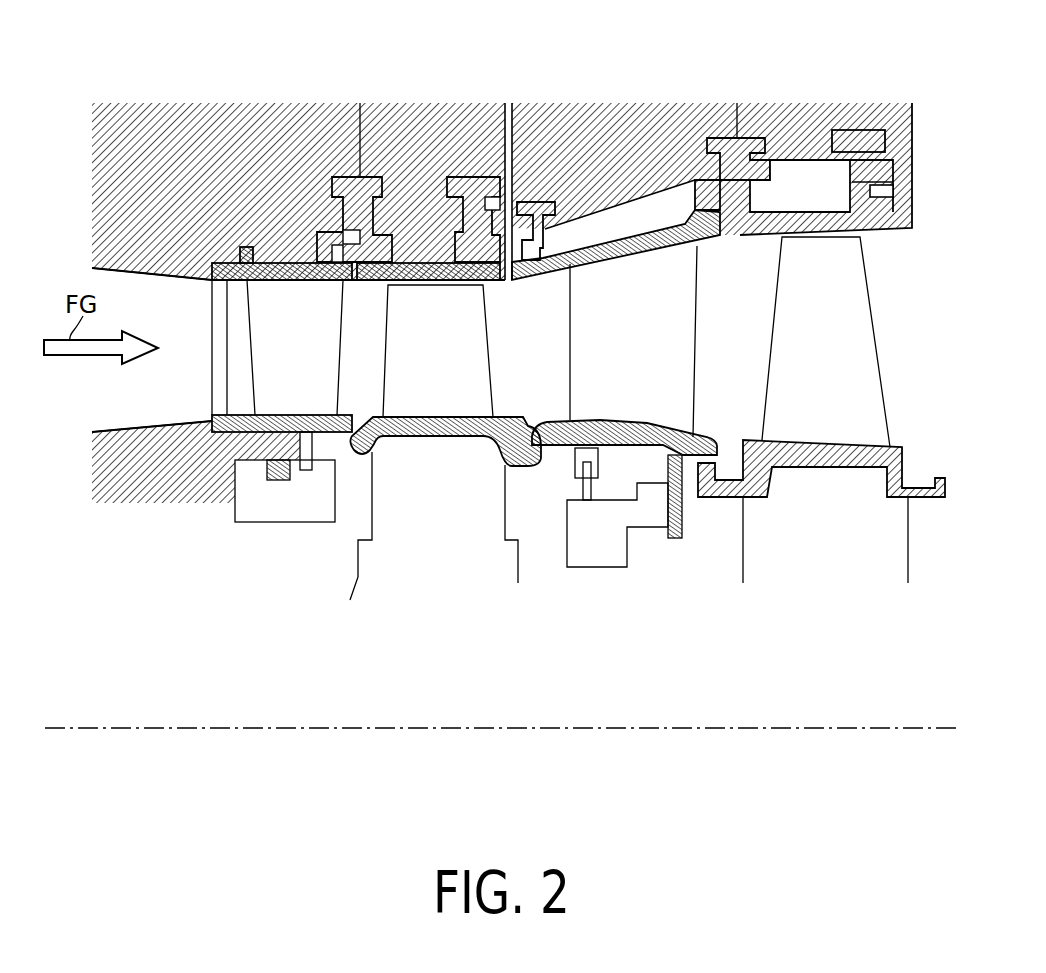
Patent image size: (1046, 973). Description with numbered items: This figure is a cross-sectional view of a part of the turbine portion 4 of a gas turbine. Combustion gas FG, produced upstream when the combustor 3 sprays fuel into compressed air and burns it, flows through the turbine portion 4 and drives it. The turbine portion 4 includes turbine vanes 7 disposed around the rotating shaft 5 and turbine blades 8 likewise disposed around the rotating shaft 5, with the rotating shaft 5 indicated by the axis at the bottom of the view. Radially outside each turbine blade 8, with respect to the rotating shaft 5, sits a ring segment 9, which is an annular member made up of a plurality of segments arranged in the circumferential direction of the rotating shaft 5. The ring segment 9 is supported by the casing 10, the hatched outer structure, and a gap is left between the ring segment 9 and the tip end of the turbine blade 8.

The combustor 3 is at (143, 296).
The turbine portion 4 is at (749, 71).
The rotating shaft 5 is at (886, 728).
The turbine vane 7 is at (278, 300).
The turbine blade 8 is at (436, 392).
The ring segment 9 is at (418, 263).
The casing 10 is at (386, 118).